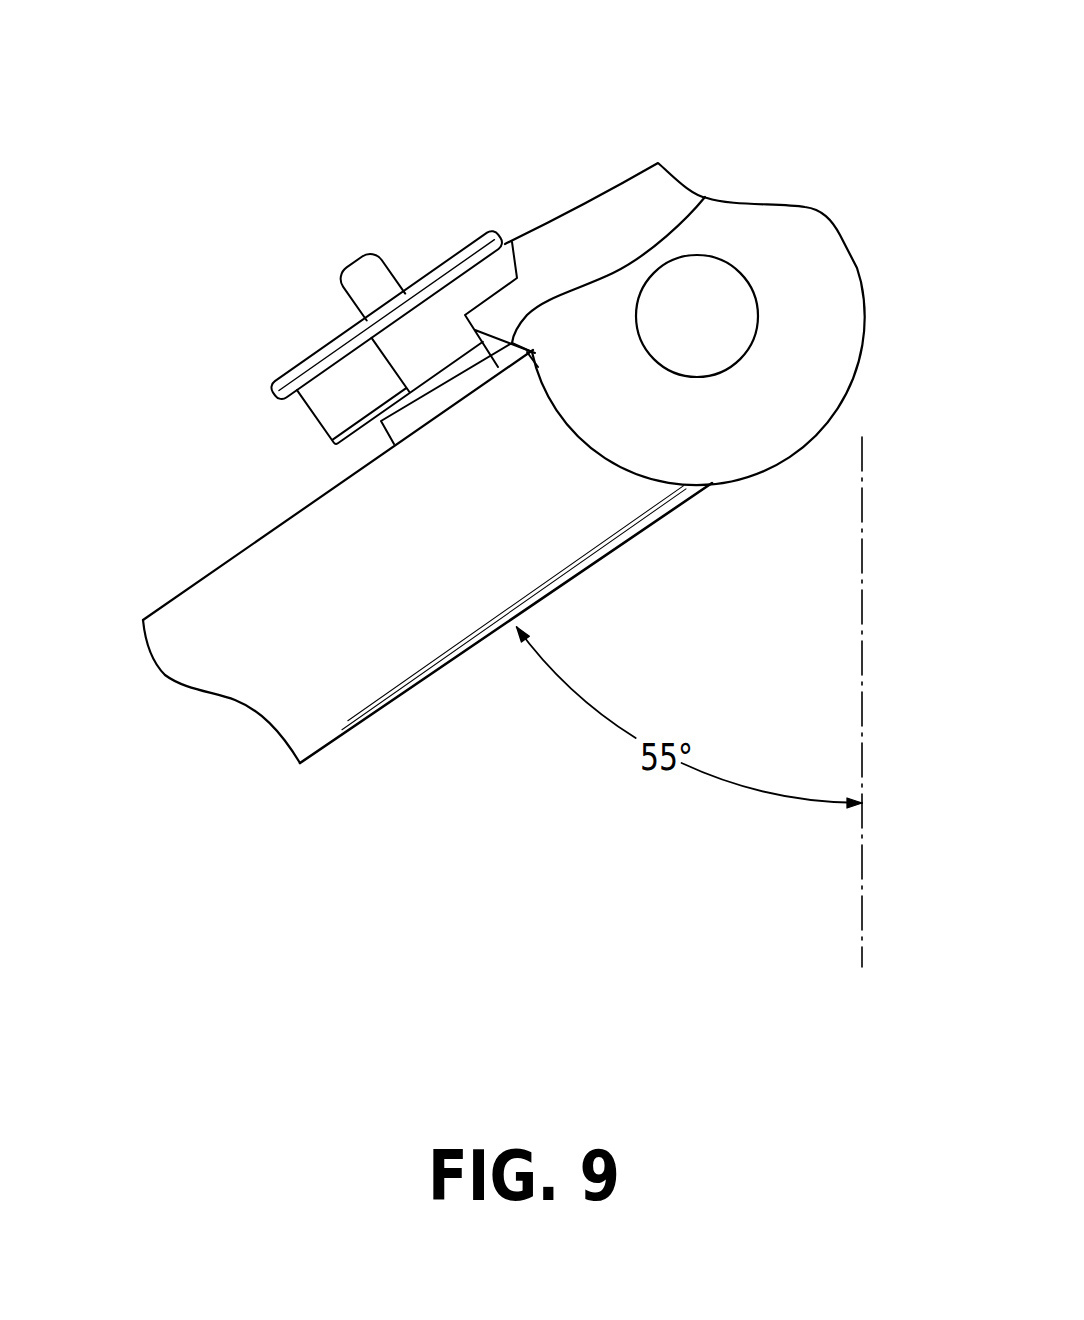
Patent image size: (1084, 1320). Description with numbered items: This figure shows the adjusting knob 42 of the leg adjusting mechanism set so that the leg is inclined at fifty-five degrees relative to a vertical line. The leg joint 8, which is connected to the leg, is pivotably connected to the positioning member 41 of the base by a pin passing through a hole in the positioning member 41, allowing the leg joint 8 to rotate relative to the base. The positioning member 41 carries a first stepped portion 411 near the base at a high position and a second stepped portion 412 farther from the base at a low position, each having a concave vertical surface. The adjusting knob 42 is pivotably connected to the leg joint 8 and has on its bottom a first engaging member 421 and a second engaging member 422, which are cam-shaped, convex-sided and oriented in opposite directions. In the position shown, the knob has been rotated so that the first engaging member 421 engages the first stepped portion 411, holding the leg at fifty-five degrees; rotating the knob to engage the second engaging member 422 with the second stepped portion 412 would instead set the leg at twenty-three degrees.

The leg joint 8 is at (303, 547).
The positioning member 41 is at (605, 220).
The first stepped portion 411 is at (512, 257).
The second stepped portion 412 is at (705, 197).
The adjusting knob 42 is at (314, 264).
The first engaging member 421 is at (490, 255).
The second engaging member 422 is at (313, 407).